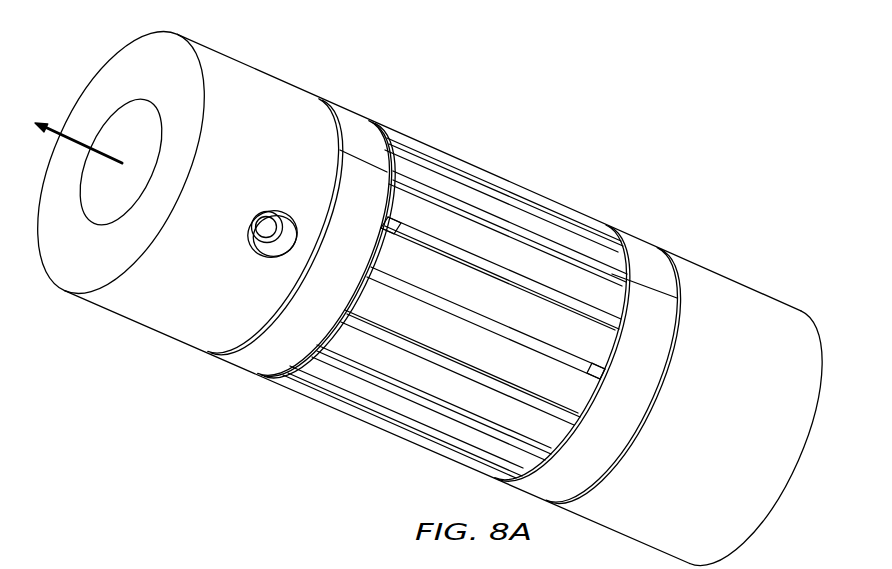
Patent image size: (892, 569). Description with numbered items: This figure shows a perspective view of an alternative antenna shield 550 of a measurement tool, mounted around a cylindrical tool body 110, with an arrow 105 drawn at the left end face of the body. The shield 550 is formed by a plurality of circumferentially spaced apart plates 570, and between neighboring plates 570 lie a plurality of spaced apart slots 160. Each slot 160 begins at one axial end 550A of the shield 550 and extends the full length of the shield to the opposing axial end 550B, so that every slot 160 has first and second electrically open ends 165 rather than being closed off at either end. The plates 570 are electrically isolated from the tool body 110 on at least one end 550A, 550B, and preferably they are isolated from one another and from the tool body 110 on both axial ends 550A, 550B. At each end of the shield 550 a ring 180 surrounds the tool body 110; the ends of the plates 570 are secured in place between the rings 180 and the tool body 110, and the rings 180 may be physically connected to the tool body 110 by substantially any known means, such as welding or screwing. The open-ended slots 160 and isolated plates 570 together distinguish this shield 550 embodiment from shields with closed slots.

The axis / direction arrow 105 is at (77, 133).
The tool body 110 is at (145, 313).
The slots 160 is at (488, 322).
The electrically open ends 165 is at (358, 266).
The rings 180 is at (350, 122).
The antenna shield 550 is at (444, 314).
The axial end of the shield 550A is at (322, 318).
The opposing axial end of the shield 550B is at (567, 440).
The plates 570 is at (508, 247).